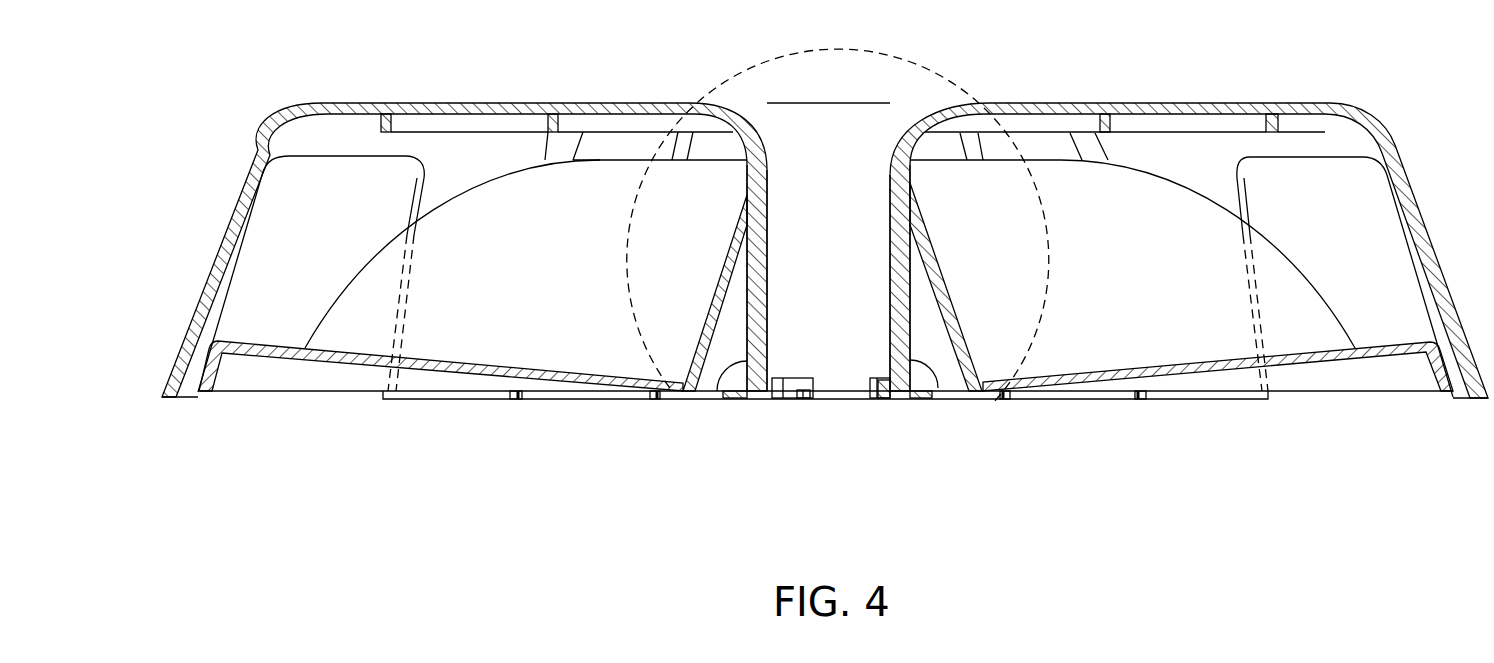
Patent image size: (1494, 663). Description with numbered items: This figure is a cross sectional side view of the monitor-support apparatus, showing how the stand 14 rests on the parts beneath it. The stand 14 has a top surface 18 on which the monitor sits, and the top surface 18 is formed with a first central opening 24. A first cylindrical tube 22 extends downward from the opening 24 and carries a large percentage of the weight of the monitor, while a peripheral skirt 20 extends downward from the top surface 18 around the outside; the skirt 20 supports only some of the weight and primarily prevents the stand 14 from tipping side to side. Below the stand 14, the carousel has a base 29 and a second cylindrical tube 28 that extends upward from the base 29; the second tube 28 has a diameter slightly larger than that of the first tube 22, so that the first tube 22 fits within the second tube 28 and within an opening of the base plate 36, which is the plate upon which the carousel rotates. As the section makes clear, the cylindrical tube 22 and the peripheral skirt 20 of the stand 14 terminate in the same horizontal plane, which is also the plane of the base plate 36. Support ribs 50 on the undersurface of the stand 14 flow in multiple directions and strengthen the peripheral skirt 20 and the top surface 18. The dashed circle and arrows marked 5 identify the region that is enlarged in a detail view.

The stand 14 is at (1388, 118).
The top surface 18 is at (470, 103).
The peripheral skirt 20 is at (568, 399).
The first cylindrical tube 22 is at (760, 398).
The first central opening 24 is at (877, 127).
The second cylindrical tube 28 is at (725, 396).
The base 29 is at (1392, 358).
The base plate 36 is at (745, 398).
The support ribs 50 is at (397, 258).
The section line 5- 5 is at (670, 388).